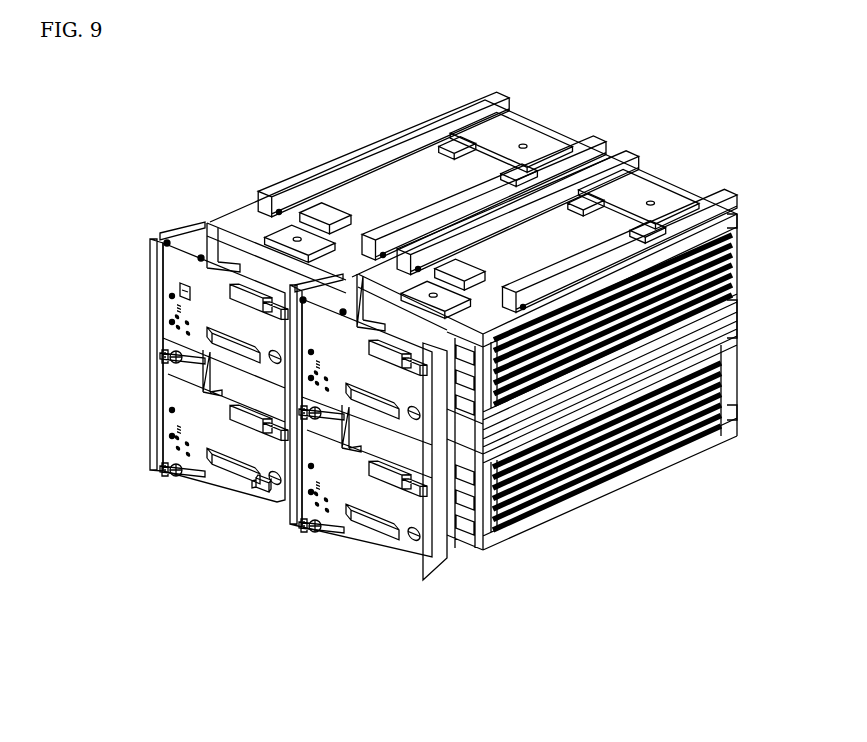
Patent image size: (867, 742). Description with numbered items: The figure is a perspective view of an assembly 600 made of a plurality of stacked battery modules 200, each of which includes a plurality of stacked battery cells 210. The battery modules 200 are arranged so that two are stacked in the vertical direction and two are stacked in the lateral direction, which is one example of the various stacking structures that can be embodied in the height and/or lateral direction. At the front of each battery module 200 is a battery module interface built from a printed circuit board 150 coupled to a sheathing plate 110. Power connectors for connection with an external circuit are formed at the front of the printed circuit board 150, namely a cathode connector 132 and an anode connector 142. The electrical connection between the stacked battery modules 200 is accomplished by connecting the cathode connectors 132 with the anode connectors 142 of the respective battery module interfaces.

The battery module assembly 600 is at (78, 121).
The battery module 200 is at (310, 180).
The battery cell 210 is at (612, 480).
The printed circuit board 150 is at (172, 290).
The sheathing plate 110 is at (437, 560).
The cathode connector 132 is at (164, 469).
The anode connector 142 is at (257, 481).